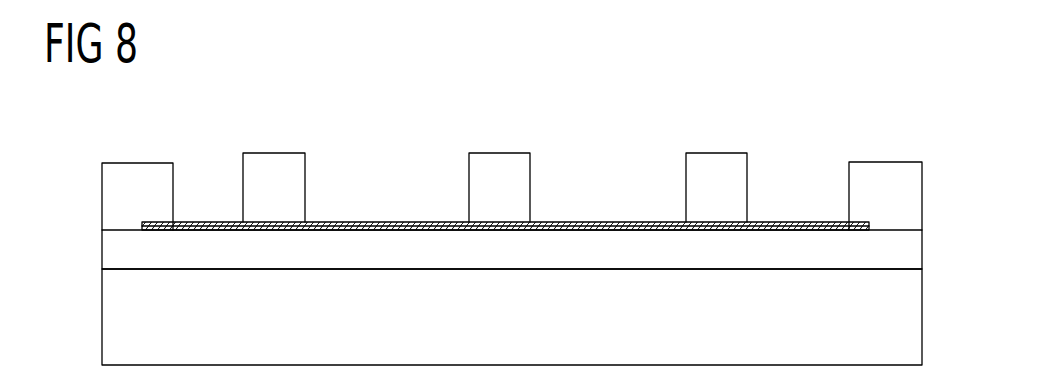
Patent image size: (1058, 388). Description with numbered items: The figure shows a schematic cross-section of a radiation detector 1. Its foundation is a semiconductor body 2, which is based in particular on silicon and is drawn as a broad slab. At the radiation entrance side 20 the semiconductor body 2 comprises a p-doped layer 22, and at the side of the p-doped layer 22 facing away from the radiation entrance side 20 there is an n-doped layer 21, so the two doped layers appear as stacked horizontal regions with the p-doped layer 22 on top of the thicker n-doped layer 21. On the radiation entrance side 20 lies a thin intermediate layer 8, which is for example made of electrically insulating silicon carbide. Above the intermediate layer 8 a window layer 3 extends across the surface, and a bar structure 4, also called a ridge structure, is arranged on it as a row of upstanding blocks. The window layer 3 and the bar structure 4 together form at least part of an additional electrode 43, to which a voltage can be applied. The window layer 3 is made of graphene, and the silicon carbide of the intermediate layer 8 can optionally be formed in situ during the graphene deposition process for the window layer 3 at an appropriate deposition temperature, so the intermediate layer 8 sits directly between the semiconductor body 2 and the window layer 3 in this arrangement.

The radiation detector 1 is at (782, 123).
The semiconductor body 2 is at (932, 230).
The n-doped layer 21 is at (112, 326).
The p-doped layer 22 is at (112, 252).
The additional electrode 43 is at (623, 160).
The bar structure 4 is at (518, 172).
The window layer 3 is at (612, 221).
The intermediate layer 8 is at (196, 229).
The radiation entrance side 20 is at (355, 228).